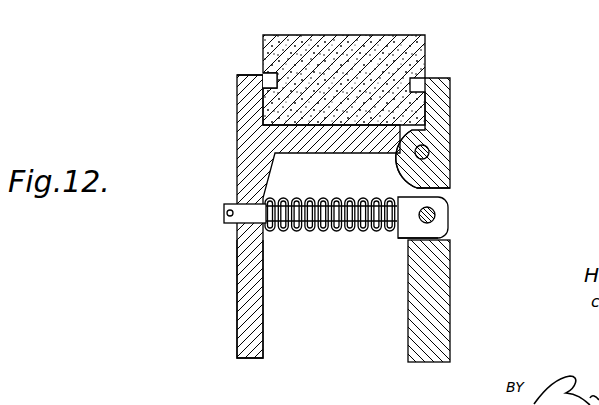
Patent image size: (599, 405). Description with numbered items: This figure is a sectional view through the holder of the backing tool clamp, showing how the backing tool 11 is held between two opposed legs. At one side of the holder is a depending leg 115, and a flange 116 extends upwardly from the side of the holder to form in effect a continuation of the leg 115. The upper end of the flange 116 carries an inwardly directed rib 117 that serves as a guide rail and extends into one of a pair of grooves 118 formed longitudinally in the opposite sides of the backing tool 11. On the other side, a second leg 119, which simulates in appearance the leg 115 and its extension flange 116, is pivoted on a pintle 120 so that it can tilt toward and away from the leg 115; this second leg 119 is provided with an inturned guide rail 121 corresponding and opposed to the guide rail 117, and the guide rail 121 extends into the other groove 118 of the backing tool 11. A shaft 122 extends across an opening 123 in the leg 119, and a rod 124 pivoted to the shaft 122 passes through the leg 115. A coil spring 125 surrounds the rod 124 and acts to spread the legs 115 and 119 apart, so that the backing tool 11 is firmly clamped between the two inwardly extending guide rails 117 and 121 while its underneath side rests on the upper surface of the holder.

The block 11 is at (366, 38).
The depending leg 115 is at (252, 279).
The flange 116 is at (237, 122).
The inwardly directed rib 117 is at (264, 78).
The grooves 118 is at (272, 82).
The second leg 119 is at (440, 283).
The pintle 120 is at (427, 151).
The inturned guide rail 121 is at (426, 80).
The shaft 122 is at (436, 213).
The opening 123 is at (440, 236).
The rod 124 is at (228, 205).
The coil spring 125 is at (332, 206).